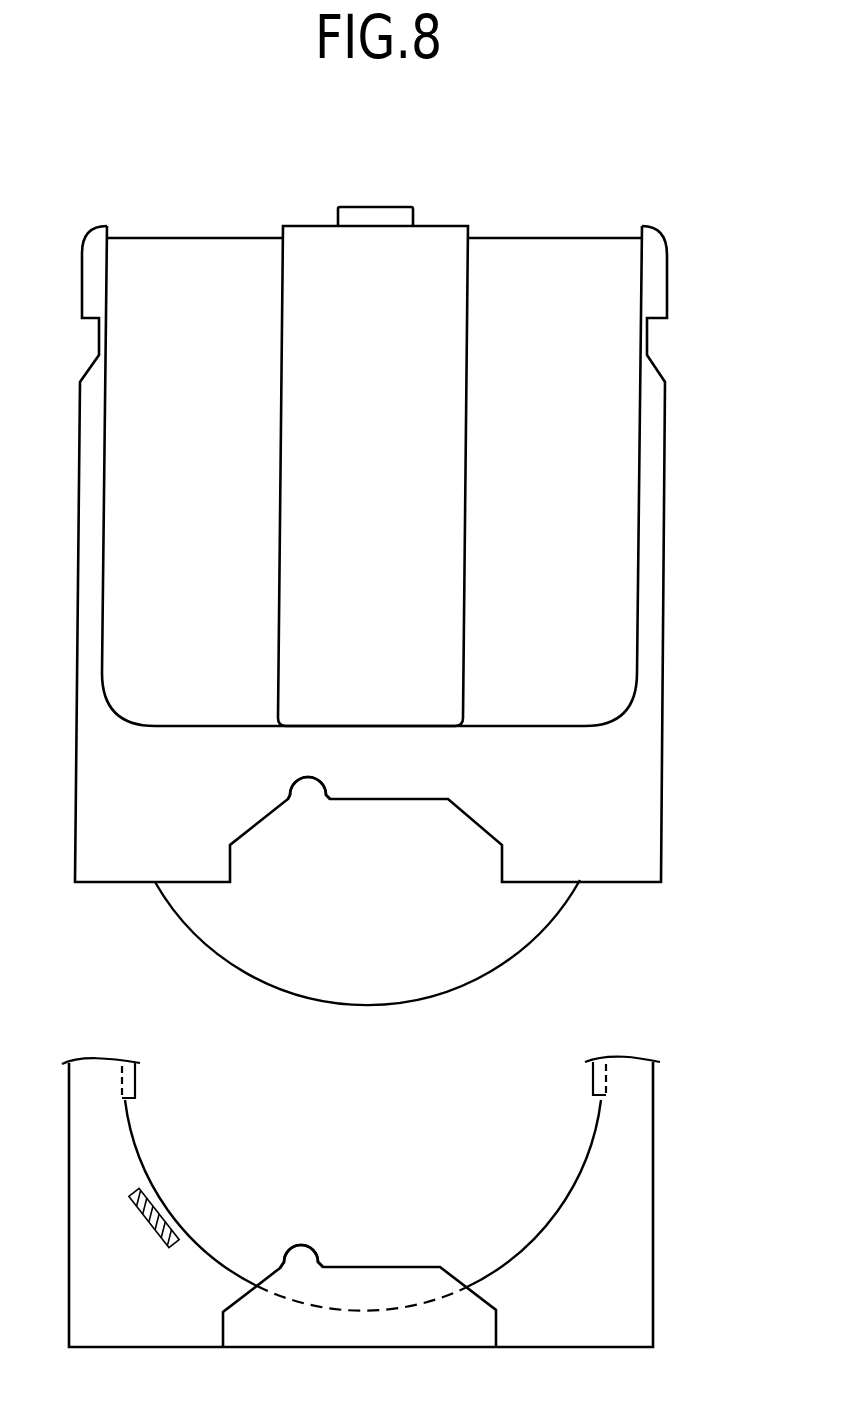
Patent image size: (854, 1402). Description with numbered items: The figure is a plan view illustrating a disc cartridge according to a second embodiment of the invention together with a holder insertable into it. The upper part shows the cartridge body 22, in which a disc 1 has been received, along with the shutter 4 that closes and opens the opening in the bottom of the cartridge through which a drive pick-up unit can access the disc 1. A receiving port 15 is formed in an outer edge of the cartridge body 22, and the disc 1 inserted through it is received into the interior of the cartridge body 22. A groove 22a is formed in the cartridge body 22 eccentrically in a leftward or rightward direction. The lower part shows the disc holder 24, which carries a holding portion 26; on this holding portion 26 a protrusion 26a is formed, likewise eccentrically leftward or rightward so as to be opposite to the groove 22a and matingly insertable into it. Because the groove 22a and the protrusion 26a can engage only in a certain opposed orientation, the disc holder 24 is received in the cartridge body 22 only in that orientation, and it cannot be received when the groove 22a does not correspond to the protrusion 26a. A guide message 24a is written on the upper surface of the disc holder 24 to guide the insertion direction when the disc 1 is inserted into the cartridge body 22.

The disc 1 is at (458, 976).
The shutter 4 is at (437, 223).
The receiving port 15 is at (580, 898).
The cartridge body 22 is at (665, 440).
The groove 22a is at (308, 783).
The disc holder 24 is at (652, 1167).
The guide message 24a is at (160, 1203).
The holding portion 26 is at (420, 1266).
The protrusion 26a is at (312, 1243).